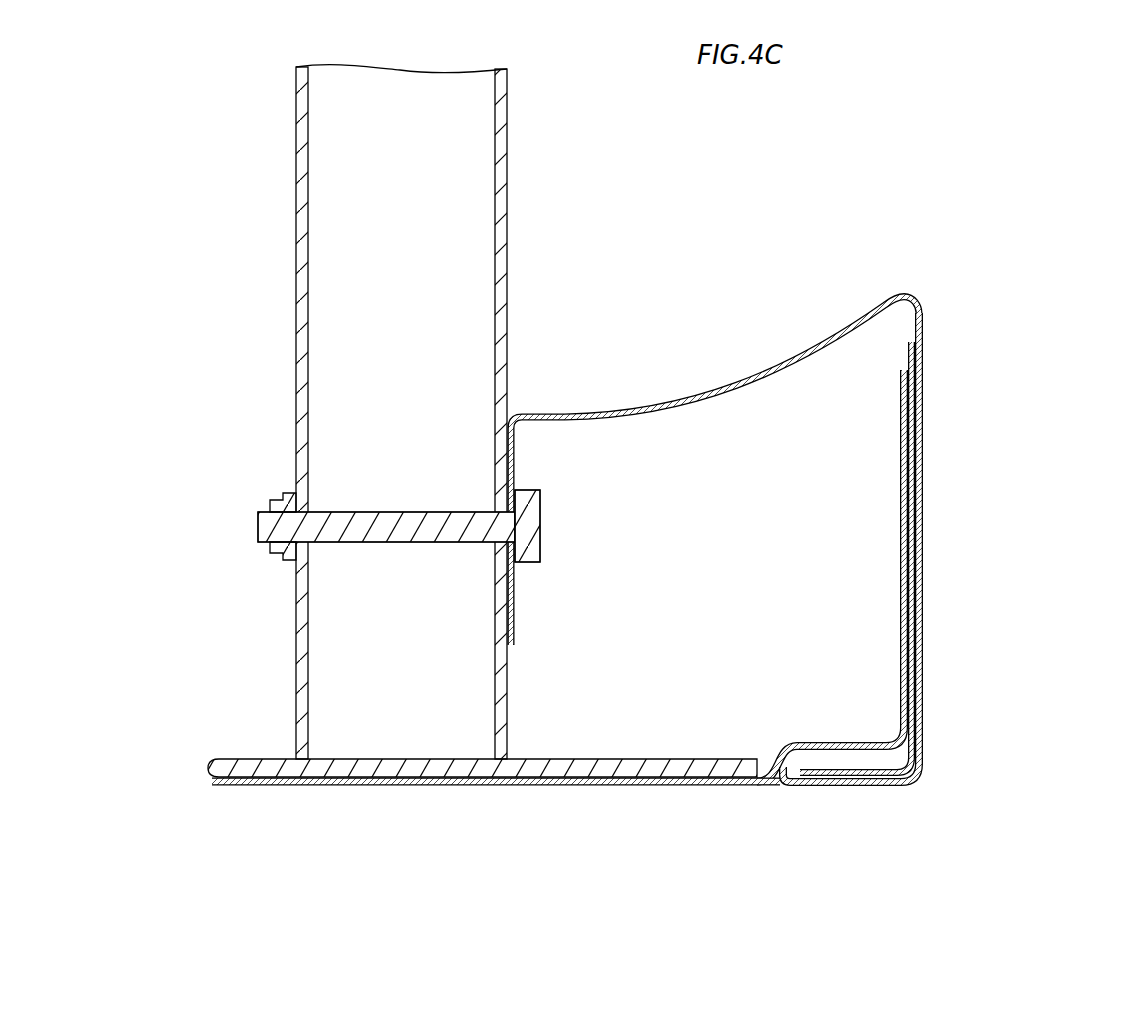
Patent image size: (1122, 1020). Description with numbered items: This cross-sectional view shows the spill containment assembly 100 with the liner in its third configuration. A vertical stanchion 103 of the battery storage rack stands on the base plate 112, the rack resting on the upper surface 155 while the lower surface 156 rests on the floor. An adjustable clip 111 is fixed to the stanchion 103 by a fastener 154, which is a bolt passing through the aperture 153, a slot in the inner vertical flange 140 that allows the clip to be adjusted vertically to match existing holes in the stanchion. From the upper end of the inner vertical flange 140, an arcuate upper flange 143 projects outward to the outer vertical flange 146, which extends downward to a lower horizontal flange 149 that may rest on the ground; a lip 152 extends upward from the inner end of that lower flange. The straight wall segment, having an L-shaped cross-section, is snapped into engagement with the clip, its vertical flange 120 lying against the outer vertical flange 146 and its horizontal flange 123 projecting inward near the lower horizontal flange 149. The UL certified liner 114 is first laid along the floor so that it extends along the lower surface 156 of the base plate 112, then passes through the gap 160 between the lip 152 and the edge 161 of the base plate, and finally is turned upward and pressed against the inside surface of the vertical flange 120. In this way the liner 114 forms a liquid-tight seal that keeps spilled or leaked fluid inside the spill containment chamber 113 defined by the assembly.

The spill containment assembly 100 is at (907, 160).
The stanchion 103 is at (498, 176).
The adjustable clip 111 is at (950, 298).
The base plate 112 is at (482, 758).
The spill containment chamber 113 is at (788, 418).
The UL certified liner 114 is at (836, 746).
The vertical flange 120 is at (918, 584).
The horizontal flange 123 is at (862, 748).
The inner vertical flange 140 is at (515, 456).
The upper flange 143 is at (710, 390).
The outer vertical flange 146 is at (925, 543).
The lower horizontal flange 149 is at (862, 774).
The lip 152 is at (785, 786).
The aperture 153 is at (515, 583).
The fastener 154 is at (375, 525).
The upper surface 155 is at (602, 758).
The lower surface 156 is at (605, 786).
The gap 160 is at (768, 765).
The edge 161 is at (777, 788).